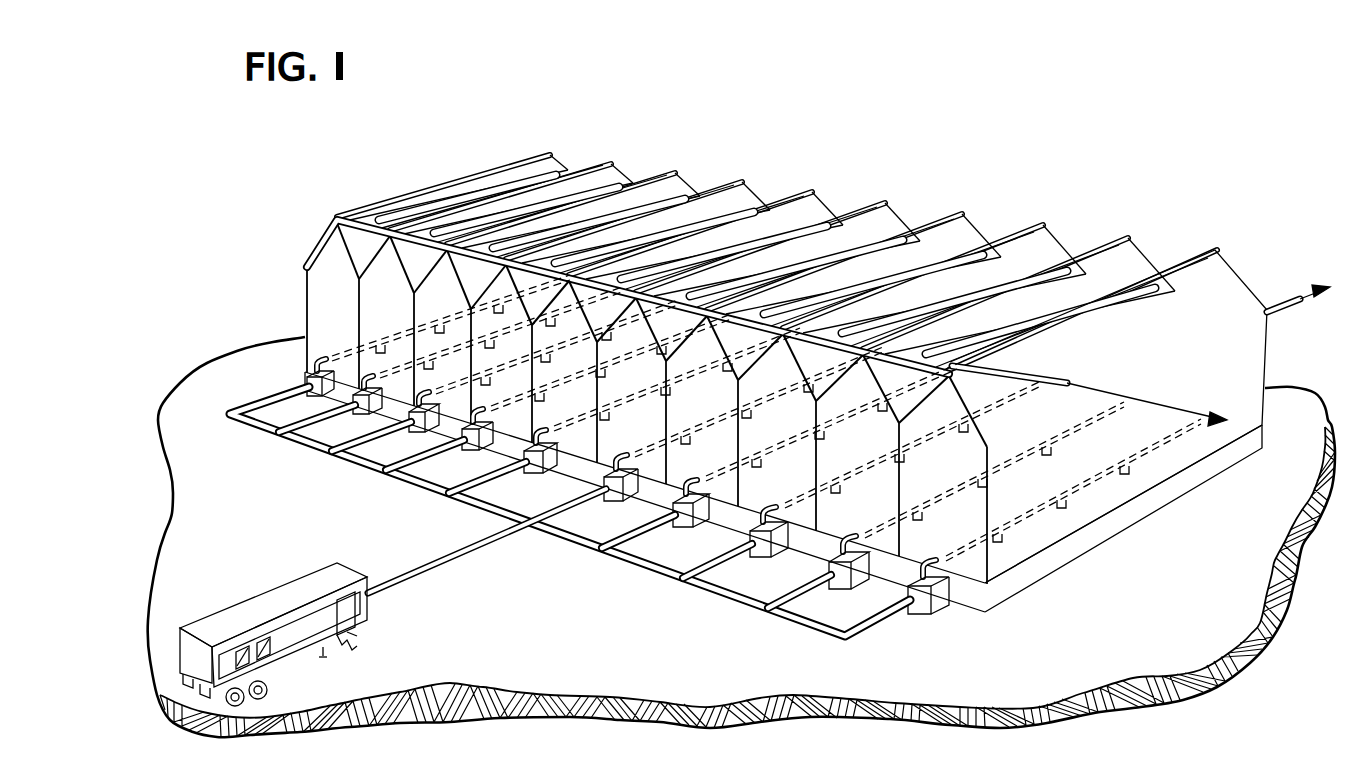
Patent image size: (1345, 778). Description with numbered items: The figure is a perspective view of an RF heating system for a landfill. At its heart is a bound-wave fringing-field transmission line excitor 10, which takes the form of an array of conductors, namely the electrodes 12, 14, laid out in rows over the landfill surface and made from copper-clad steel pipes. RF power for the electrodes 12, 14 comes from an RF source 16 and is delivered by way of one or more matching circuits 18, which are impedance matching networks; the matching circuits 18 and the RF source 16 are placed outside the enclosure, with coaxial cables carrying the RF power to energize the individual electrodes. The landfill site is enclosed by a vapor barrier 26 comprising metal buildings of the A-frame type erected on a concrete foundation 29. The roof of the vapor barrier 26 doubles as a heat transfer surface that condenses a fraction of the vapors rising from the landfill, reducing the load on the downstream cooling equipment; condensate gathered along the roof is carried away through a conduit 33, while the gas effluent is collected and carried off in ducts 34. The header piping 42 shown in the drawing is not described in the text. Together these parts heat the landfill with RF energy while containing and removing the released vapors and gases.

The bound-wave fringing-field transmission line excitor 10 is at (992, 552).
The vapor barrier 26 is at (1250, 356).
The concrete foundation 29 is at (1145, 505).
The ducts 34 is at (1030, 370).
The conduit 33 is at (1283, 296).
The electrodes 12 is at (412, 330).
The electrodes 14 is at (435, 358).
The matching circuits 18 is at (312, 384).
The supply header piping 42 is at (285, 400).
The RF source 16 is at (305, 580).